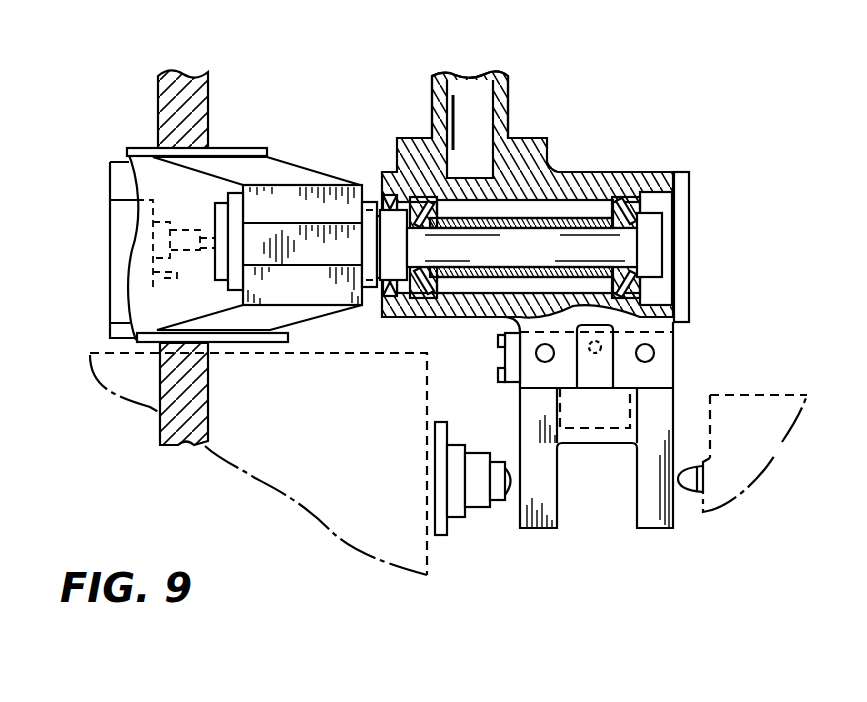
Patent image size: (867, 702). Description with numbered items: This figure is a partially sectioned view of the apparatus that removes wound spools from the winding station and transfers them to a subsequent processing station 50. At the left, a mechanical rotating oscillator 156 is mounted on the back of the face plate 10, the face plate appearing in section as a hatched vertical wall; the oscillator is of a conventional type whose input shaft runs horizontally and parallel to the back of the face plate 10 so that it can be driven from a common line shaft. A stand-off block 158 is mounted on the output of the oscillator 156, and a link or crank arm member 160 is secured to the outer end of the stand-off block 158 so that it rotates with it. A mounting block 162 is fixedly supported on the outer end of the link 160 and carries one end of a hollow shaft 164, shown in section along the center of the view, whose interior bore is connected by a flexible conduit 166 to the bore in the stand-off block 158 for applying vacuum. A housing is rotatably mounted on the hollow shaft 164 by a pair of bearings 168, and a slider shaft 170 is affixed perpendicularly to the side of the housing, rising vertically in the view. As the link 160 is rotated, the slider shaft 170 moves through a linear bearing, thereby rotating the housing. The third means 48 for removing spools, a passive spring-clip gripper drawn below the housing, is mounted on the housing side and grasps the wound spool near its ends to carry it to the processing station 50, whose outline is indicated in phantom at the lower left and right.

The face plate 10 is at (204, 88).
The third means for removing spools 48 is at (643, 512).
The subsequent processing station 50 is at (402, 542).
The mechanical rotating oscillator 156 is at (140, 150).
The stand-off block 158 is at (246, 148).
The link or crank arm member 160 is at (293, 167).
The mounting block 162 is at (352, 183).
The hollow shaft 164 is at (548, 257).
The flexible conduit 166 is at (471, 310).
The bearings 168 is at (636, 216).
The slider shaft 170 is at (508, 105).